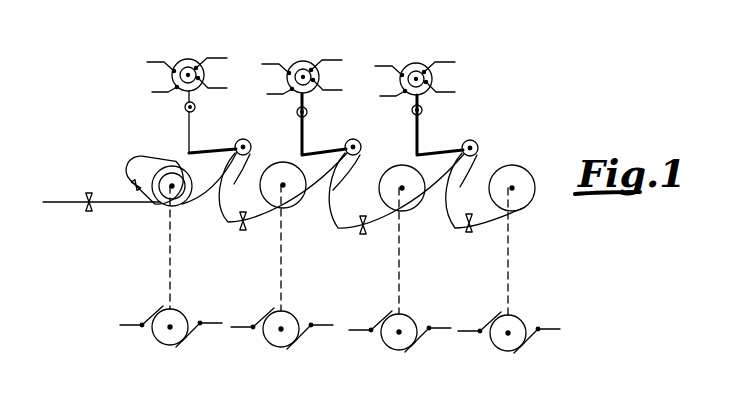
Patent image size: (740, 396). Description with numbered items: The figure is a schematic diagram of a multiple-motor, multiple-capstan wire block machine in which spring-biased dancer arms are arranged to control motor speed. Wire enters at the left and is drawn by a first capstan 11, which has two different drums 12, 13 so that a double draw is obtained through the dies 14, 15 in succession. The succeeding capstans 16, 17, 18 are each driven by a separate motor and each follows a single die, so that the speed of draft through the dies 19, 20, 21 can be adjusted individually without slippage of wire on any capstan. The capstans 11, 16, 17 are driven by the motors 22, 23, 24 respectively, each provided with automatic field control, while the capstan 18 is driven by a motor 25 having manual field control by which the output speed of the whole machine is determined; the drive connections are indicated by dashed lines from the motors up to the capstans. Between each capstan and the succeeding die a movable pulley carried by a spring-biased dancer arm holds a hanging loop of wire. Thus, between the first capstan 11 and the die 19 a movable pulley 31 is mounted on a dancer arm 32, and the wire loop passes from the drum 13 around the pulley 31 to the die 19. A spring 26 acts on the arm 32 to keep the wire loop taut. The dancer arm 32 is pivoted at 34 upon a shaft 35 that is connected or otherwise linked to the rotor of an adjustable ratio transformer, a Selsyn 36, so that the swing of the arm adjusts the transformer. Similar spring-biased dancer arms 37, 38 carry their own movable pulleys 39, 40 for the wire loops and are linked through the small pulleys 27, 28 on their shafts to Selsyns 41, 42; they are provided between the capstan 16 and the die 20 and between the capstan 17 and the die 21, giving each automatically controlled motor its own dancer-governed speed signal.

The first capstan 11 is at (175, 170).
The drum 12 is at (170, 193).
The drum 13 is at (178, 208).
The die 14 is at (88, 214).
The die 15 is at (134, 184).
The capstan 16 is at (295, 207).
The capstan 17 is at (411, 205).
The capstan 18 is at (525, 208).
The die 19 is at (244, 230).
The die 20 is at (364, 234).
The die 21 is at (470, 232).
The motor 22 is at (183, 338).
The motor 23 is at (294, 340).
The motor 24 is at (412, 343).
The motor 25 is at (521, 344).
The spring 26 is at (196, 106).
The pulley 27 is at (309, 110).
The pulley 28 is at (424, 109).
The movable pulley 31 is at (250, 143).
The dancer arm 32 is at (207, 151).
The pivot 34 is at (186, 154).
The shaft 35 is at (185, 112).
The Selsyn 36 is at (189, 59).
The dancer arm 37 is at (320, 152).
The dancer arm 38 is at (437, 151).
The dancer roller 39 is at (360, 143).
The dancer roller 40 is at (478, 143).
The Selsyn 41 is at (304, 61).
The Selsyn 42 is at (418, 63).